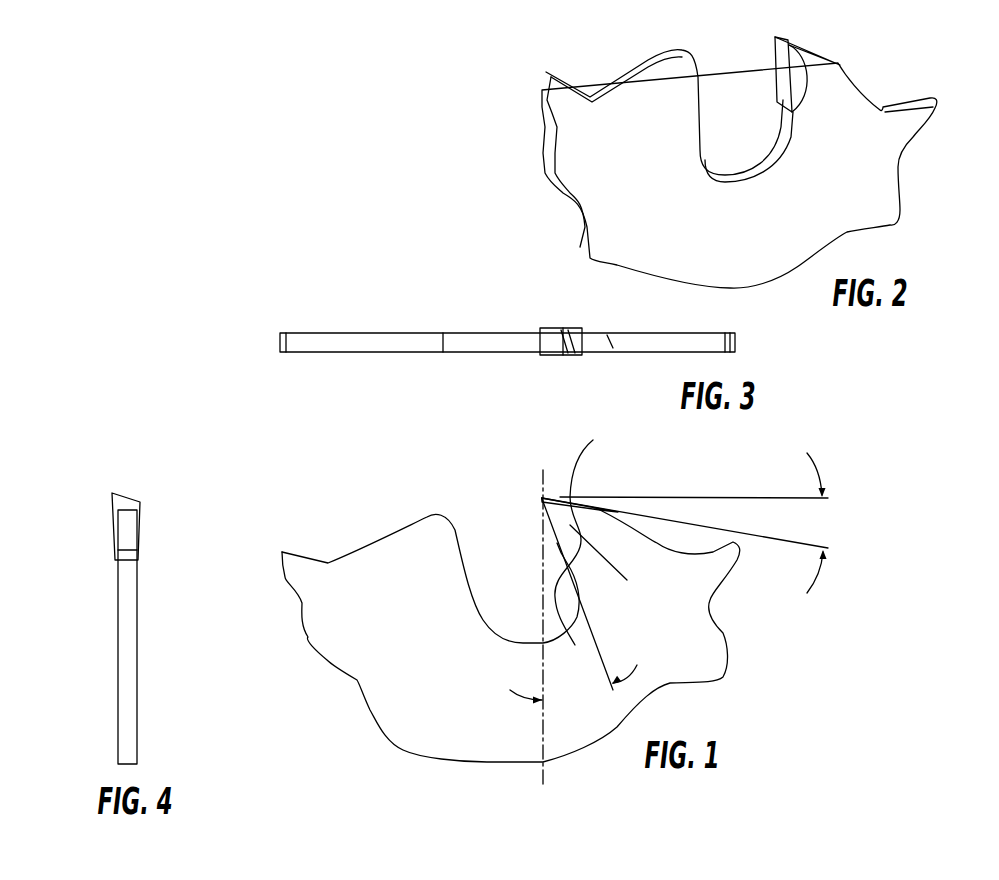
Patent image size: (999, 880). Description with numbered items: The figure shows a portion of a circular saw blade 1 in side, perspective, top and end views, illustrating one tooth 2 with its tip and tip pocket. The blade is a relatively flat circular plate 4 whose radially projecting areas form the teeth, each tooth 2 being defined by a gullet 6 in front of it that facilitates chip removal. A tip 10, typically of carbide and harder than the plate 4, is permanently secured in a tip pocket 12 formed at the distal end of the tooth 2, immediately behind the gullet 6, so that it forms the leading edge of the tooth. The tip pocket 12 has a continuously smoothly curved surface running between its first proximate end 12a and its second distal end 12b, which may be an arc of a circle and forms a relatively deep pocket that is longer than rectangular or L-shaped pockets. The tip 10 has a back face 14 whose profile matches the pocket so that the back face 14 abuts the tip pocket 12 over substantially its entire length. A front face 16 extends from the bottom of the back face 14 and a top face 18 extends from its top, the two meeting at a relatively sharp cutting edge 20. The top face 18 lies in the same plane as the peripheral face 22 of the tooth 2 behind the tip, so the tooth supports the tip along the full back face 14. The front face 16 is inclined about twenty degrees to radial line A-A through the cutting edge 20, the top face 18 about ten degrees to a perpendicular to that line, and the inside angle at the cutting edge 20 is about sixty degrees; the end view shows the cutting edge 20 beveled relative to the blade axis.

In FIG. 1, the saw blade 1 is at (555, 618).
In FIG. 2, the saw blade 1 is at (765, 149).
In FIG. 3, the saw blade 1 is at (507, 317).
In FIG. 4, the saw blade 1 is at (130, 614).
In FIG. 1, the tooth 2 is at (615, 538).
In FIG. 2, the tooth 2 is at (835, 82).
In FIG. 3, the tooth 2 is at (600, 352).
In FIG. 1, the circular plate 4 is at (370, 680).
In FIG. 2, the circular plate 4 is at (881, 196).
In FIG. 3, the circular plate 4 is at (370, 333).
In FIG. 1, the gullet 6 is at (497, 633).
In FIG. 2, the gullet 6 is at (752, 168).
In FIG. 3, the gullet 6 is at (490, 342).
In FIG. 1, the tip 10 is at (550, 488).
In FIG. 2, the tip 10 is at (786, 62).
In FIG. 3, the tip 10 is at (580, 327).
In FIG. 4, the tip 10 is at (126, 512).
In FIG. 1, the tip pocket 12 is at (611, 560).
In FIG. 1, the first proximate end 12a is at (577, 594).
In FIG. 1, the second distal end 12b is at (593, 534).
In FIG. 1, the back face 14 is at (572, 524).
In FIG. 2, the front face 16 is at (780, 70).
In FIG. 1, the top face 18 is at (538, 496).
In FIG. 2, the top face 18 is at (788, 45).
In FIG. 3, the top face 18 is at (552, 355).
In FIG. 1, the cutting edge 20 is at (538, 498).
In FIG. 2, the cutting edge 20 is at (775, 50).
In FIG. 4, the cutting edge 20 is at (135, 495).
In FIG. 1, the peripheral face 22 is at (602, 510).
In FIG. 2, the peripheral face 22 is at (822, 57).
In FIG. 3, the peripheral face 22 is at (583, 338).